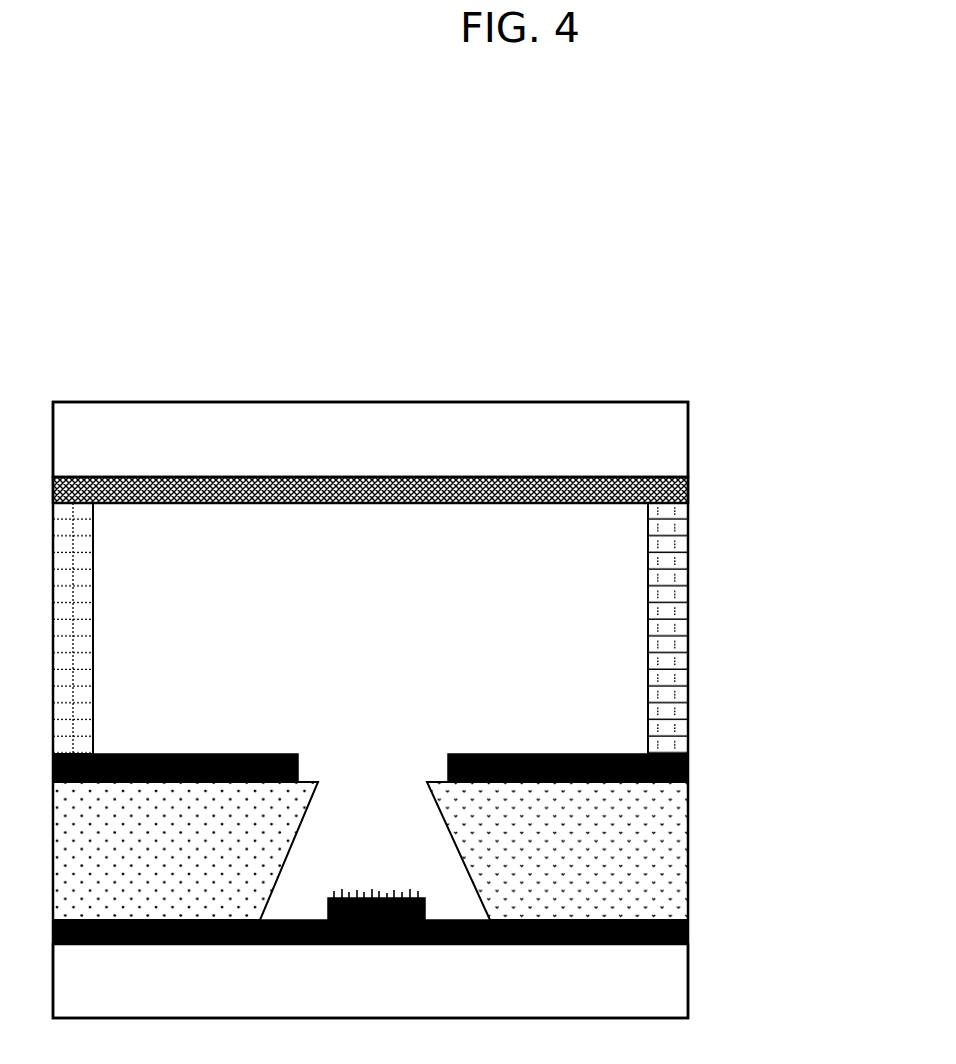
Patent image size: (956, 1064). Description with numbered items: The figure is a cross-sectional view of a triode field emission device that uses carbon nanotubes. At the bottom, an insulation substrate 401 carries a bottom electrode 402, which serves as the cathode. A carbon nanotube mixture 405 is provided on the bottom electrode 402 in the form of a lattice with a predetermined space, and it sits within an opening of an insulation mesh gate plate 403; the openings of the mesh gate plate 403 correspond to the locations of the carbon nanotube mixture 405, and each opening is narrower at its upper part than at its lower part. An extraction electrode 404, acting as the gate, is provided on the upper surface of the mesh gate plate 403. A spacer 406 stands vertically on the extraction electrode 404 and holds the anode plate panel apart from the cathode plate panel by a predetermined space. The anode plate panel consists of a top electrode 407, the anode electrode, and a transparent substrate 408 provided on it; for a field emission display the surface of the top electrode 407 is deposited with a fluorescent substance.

The insulation substrate 401 is at (690, 989).
The bottom electrode 402 is at (690, 927).
The insulation mesh gate plate 403 is at (690, 841).
The extraction electrode 404 is at (690, 765).
The carbon nanotube mixture 405 is at (360, 897).
The spacer 406 is at (688, 603).
The top electrode 407 is at (688, 487).
The transparent substrate 408 is at (688, 430).